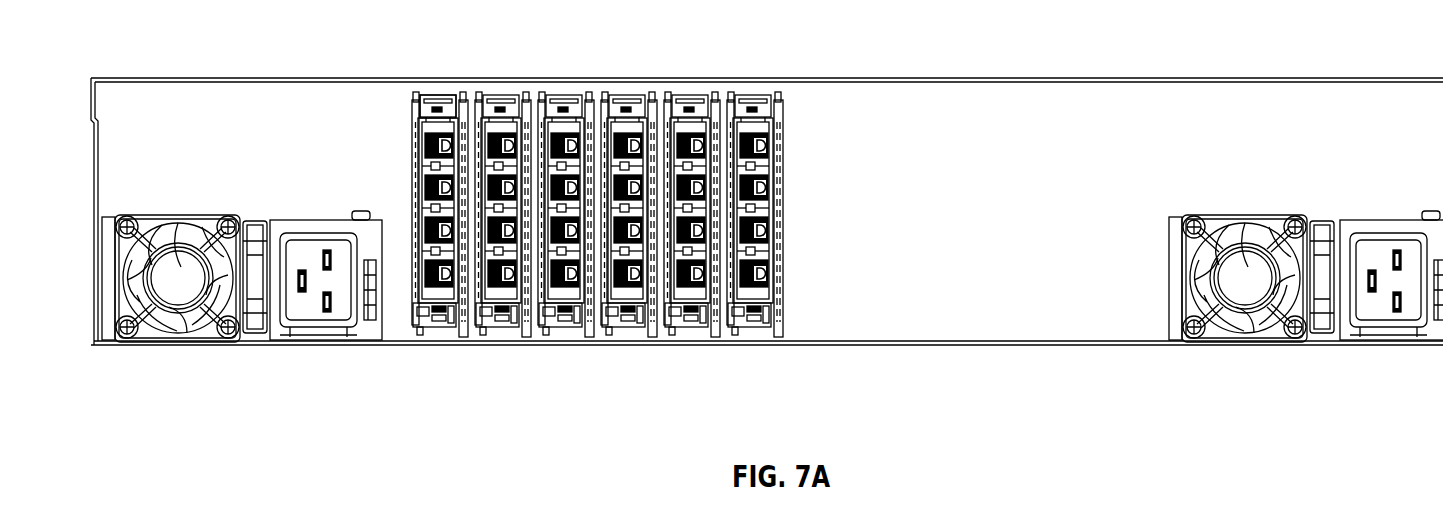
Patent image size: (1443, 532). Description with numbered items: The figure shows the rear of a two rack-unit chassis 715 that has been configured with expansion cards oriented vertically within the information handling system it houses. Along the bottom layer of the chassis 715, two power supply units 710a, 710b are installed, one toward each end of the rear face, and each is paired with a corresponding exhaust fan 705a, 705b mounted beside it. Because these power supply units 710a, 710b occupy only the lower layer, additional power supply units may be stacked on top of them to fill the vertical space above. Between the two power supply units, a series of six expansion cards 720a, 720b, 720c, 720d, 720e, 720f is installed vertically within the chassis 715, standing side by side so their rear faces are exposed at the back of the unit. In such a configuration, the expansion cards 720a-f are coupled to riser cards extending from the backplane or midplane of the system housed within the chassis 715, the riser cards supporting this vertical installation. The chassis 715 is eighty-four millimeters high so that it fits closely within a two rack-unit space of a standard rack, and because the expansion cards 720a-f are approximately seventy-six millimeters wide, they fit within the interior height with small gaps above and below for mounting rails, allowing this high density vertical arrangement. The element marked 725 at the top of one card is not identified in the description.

The exhaust fan 705a is at (160, 323).
The exhaust fan 705b is at (1228, 322).
The power supply unit 710a is at (322, 327).
The power supply unit 710b is at (1390, 325).
The chassis 715 is at (1280, 73).
The expansion card 720a is at (432, 318).
The expansion card 720b is at (508, 325).
The expansion card 720c is at (573, 320).
The expansion card 720d is at (633, 312).
The expansion card 720e is at (698, 323).
The expansion card 720f is at (765, 312).
The module cap 725 is at (427, 93).